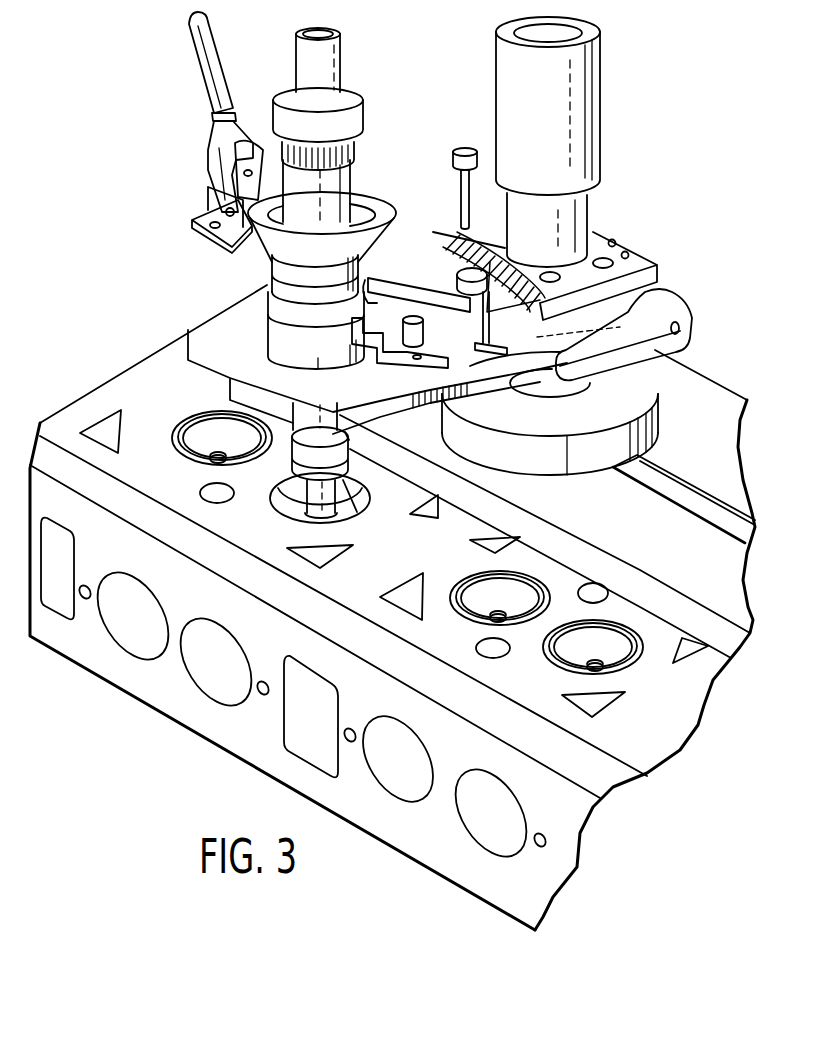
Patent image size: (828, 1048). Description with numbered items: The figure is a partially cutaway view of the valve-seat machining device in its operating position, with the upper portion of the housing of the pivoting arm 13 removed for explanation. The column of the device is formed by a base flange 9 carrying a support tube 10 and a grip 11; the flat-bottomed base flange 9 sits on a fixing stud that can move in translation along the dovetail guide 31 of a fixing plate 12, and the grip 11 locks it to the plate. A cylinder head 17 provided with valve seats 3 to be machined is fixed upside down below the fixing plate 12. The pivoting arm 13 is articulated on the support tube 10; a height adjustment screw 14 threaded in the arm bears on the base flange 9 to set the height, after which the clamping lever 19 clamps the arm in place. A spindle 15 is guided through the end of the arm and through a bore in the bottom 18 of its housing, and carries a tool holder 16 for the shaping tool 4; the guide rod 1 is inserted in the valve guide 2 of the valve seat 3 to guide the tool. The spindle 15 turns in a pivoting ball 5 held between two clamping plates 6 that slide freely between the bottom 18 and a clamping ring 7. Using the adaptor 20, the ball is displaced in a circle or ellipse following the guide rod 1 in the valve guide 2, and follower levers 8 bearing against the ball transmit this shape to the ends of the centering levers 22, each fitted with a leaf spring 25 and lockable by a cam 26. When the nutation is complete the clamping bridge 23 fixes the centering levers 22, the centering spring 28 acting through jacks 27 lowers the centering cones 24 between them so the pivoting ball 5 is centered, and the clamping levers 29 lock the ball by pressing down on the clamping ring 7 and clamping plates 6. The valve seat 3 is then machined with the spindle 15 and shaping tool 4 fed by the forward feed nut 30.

The guide rod 1 is at (313, 497).
The valve guide 2 is at (497, 613).
The valve seat 3 is at (180, 433).
The shaping tool 4 is at (350, 483).
The pivoting ball 5 is at (285, 340).
The clamping plates 6 is at (285, 296).
The clamping ring 7 is at (285, 273).
The follower lever 8 is at (345, 433).
The base flange 9 is at (640, 380).
The support tube 10 is at (577, 217).
The grip 11 is at (582, 123).
The fixing plate 12 is at (693, 593).
The pivoting arm 13 is at (635, 258).
The height adjustment screw 14 is at (465, 150).
The spindle 15 is at (307, 417).
The tool holder 16 is at (307, 467).
The cylinder head 17 is at (163, 683).
The bottom 18 is at (243, 350).
The clamping lever 19 is at (657, 310).
The adaptor 20 is at (323, 70).
The centering levers 22 is at (440, 312).
The clamping bridge 23 is at (418, 287).
The centering cones 24 is at (432, 398).
The leaf spring 25 is at (455, 323).
The cam 26 is at (443, 240).
The jacks 27 is at (410, 316).
The centering spring 28 is at (380, 330).
The clamping levers 29 is at (207, 75).
The forward feed nut 30 is at (282, 122).
The dovetail guide 31 is at (697, 510).